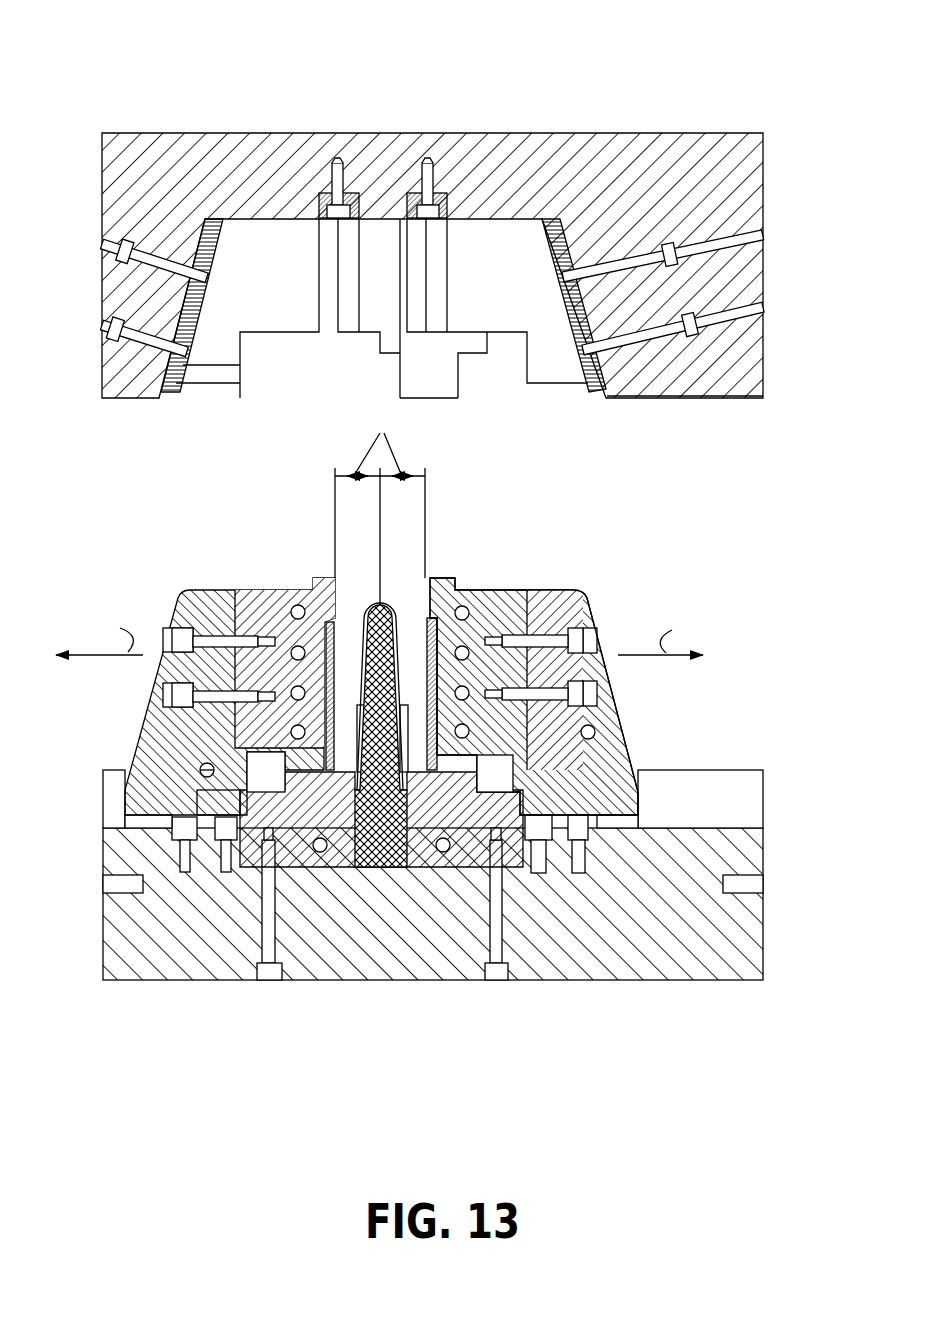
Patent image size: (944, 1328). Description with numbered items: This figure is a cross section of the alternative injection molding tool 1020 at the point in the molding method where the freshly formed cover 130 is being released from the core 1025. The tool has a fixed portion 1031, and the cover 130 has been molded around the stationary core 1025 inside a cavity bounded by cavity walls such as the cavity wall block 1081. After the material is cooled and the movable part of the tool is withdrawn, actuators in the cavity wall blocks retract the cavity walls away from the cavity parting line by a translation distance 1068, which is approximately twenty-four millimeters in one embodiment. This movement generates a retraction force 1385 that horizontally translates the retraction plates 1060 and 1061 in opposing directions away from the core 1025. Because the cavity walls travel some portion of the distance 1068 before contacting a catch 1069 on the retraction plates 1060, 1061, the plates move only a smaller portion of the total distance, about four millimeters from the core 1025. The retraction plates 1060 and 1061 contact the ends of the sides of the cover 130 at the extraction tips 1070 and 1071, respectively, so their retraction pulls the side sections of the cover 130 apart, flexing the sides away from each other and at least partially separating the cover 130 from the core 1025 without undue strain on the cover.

The injection molding tool 1020 is at (174, 66).
The translation distance 1068 is at (380, 504).
The core 1025 is at (366, 621).
The cover 130 is at (395, 609).
The cavity wall block 1081 is at (530, 590).
The fixed portion 1031 is at (707, 552).
The retraction force 1385 is at (396, 624).
The catch 1069 is at (668, 682).
The retraction plate 1061 is at (630, 770).
The retraction plate 1060 is at (297, 822).
The extraction tip 1070 is at (356, 862).
The extraction tip 1071 is at (410, 818).